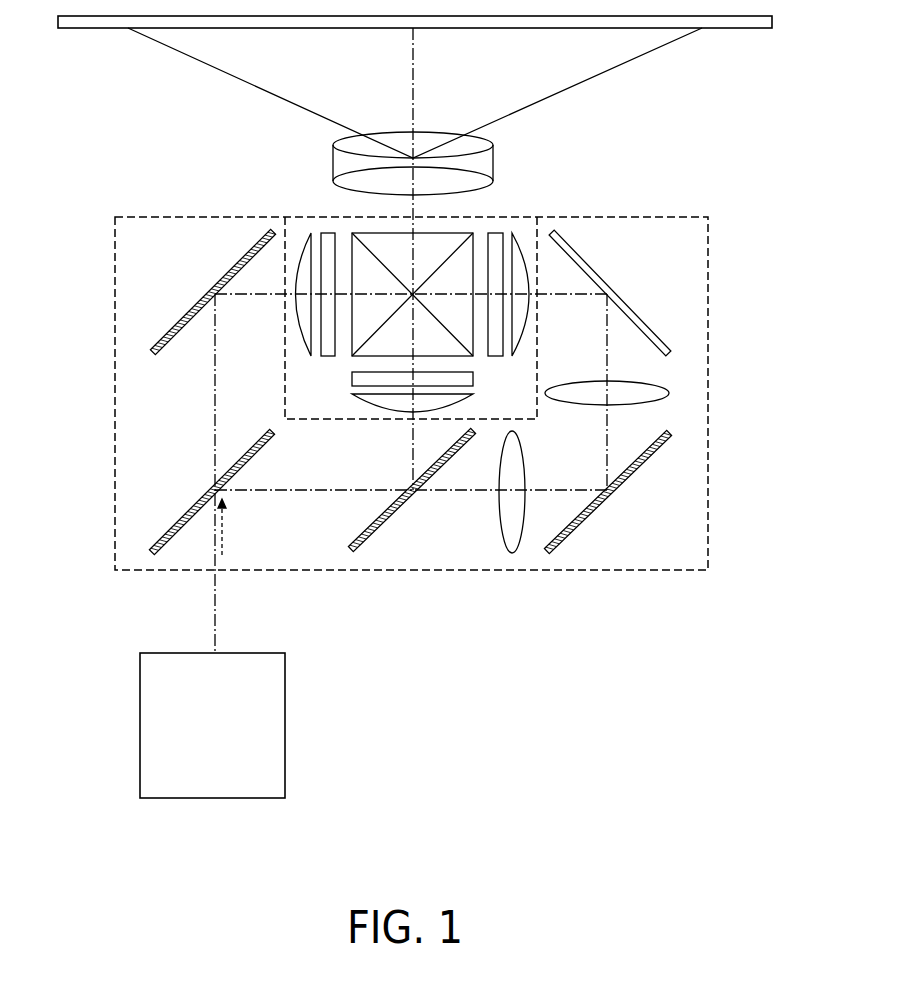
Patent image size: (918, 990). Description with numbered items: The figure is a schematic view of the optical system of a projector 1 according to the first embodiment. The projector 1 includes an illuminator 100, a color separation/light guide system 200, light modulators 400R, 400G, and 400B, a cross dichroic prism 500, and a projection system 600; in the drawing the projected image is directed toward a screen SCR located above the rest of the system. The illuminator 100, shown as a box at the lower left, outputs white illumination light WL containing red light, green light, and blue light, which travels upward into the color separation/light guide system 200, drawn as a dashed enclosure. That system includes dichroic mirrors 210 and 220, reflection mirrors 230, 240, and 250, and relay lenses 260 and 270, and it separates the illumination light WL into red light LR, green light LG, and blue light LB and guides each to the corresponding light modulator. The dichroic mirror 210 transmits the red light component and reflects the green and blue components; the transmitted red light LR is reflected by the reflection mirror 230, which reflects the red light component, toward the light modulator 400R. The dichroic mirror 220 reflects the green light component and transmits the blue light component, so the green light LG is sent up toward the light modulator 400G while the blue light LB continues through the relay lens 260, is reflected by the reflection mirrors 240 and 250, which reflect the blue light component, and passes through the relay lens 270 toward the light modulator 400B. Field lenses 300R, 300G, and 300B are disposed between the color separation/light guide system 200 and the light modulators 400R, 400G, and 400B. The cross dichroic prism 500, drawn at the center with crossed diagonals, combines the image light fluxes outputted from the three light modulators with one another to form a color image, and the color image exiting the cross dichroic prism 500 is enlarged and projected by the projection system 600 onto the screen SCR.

The projector 1 is at (716, 200).
The illuminator 100 is at (285, 672).
The color separation/light guide system 200 is at (115, 346).
The dichroic mirror 210 is at (181, 515).
The dichroic mirror 220 is at (394, 522).
The reflection mirror 230 is at (195, 306).
The reflection mirror 240 is at (632, 482).
The reflection mirror 250 is at (640, 310).
The relay lens 260 is at (497, 508).
The relay lens 270 is at (662, 383).
The field lens 300R is at (306, 232).
The field lens 300G is at (352, 400).
The field lens 300B is at (519, 232).
The light modulator 400R is at (328, 232).
The light modulator 400G is at (352, 380).
The light modulator 400B is at (496, 232).
The cross dichroic prism 500 is at (425, 243).
The projection system 600 is at (397, 143).
The screen SCR is at (740, 30).
The illumination light WL is at (226, 537).
The red light LR is at (215, 412).
The green light LG is at (413, 452).
The blue light LB is at (607, 447).